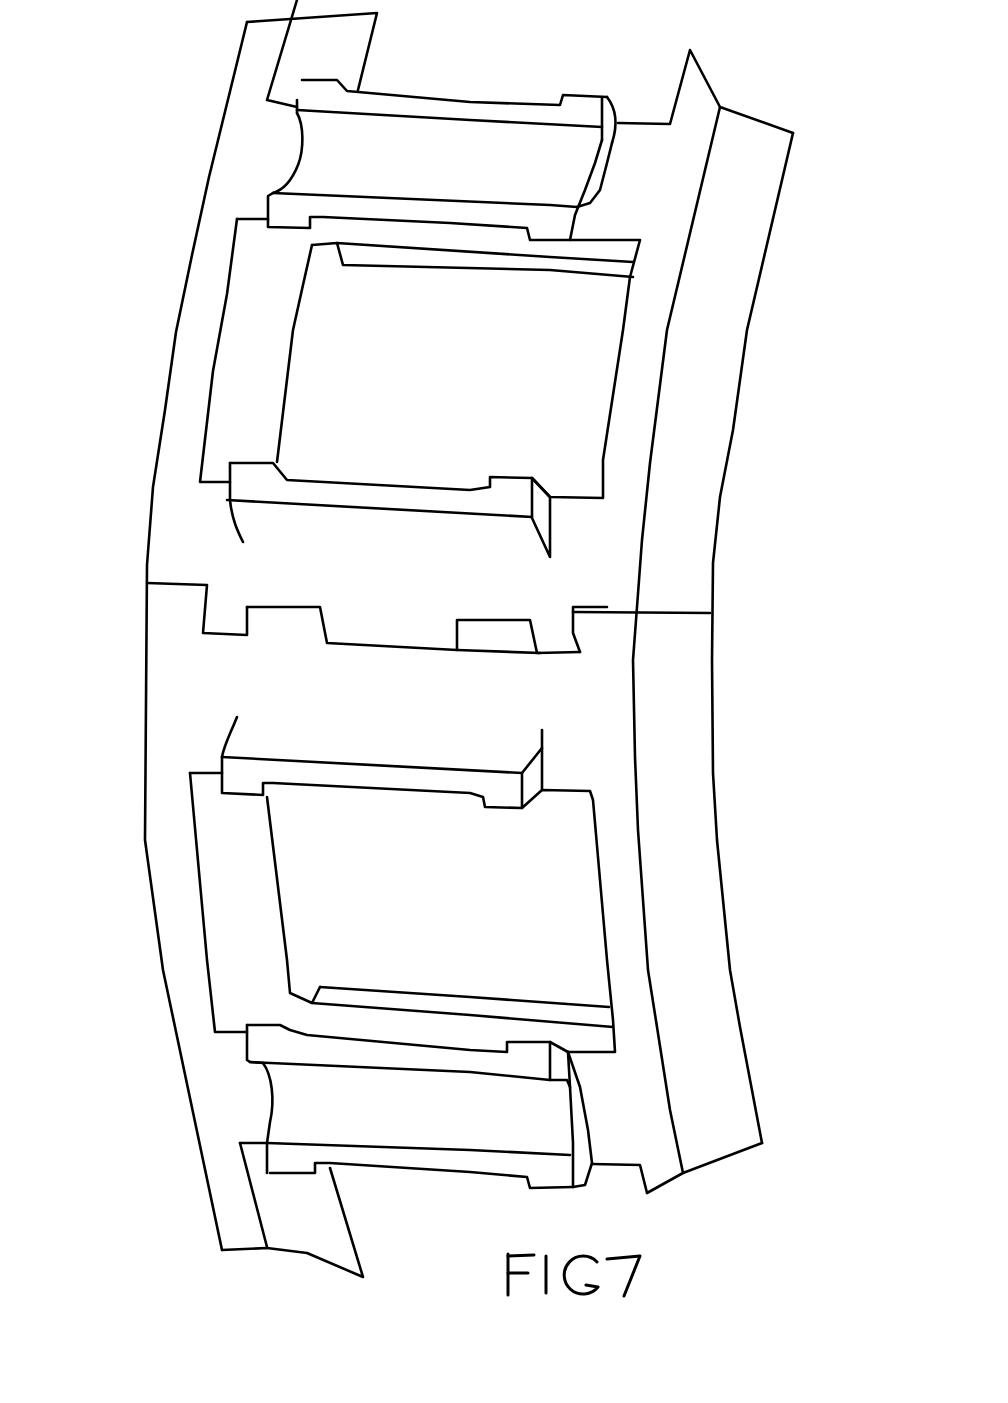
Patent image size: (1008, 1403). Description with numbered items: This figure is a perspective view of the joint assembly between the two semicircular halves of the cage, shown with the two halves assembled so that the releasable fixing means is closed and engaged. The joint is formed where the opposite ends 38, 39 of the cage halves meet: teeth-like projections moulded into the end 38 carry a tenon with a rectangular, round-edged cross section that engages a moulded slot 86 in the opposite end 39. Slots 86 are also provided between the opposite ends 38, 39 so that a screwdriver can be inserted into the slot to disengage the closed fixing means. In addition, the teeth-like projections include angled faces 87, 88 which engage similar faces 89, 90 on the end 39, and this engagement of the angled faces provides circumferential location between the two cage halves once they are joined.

The end 38 is at (700, 570).
The opposite end 39 is at (688, 632).
The slot 86 is at (295, 620).
The angled face 87 is at (714, 674).
The angled face 88 is at (575, 632).
The face 89 is at (147, 606).
The face 90 is at (227, 620).